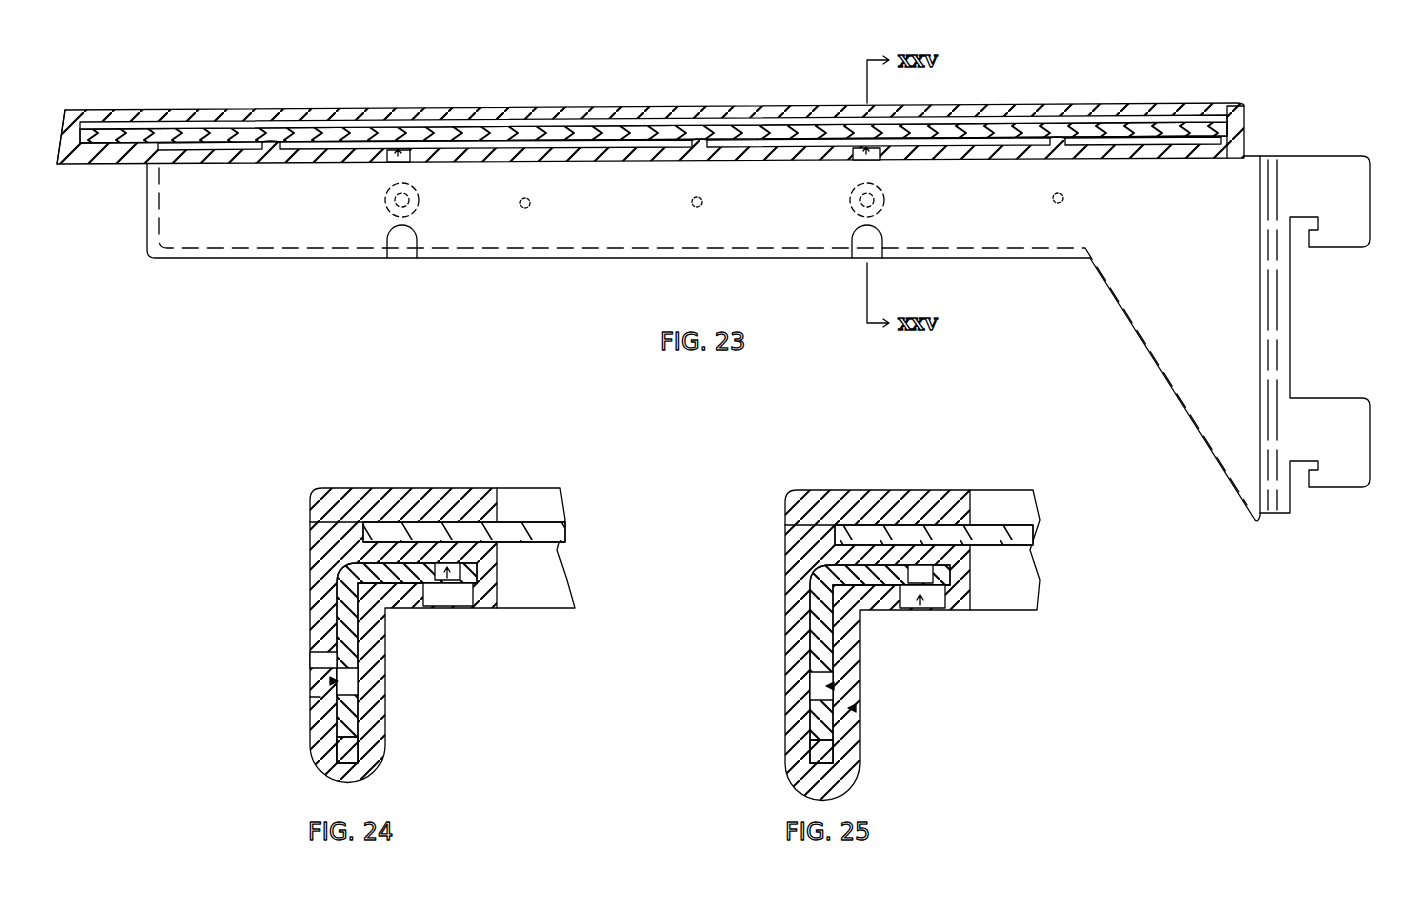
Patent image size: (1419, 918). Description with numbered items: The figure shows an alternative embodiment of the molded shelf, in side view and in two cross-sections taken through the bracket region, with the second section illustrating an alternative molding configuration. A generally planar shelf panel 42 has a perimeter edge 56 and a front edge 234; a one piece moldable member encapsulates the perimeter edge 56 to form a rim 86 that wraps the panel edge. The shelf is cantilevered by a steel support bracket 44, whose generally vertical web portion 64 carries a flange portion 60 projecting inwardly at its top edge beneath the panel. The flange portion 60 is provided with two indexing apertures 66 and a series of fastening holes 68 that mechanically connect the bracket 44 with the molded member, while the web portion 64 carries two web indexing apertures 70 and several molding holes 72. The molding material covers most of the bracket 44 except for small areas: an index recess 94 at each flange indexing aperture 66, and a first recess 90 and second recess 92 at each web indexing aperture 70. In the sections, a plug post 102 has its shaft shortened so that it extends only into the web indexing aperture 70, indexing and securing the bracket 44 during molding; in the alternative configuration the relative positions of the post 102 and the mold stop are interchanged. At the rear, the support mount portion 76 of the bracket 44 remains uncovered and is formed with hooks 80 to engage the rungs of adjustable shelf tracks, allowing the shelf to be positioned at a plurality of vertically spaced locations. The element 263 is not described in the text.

In FIG. 23, the shelf panel 42 is at (653, 122).
In FIG. 24, the shelf panel 42 is at (560, 540).
In FIG. 25, the shelf panel 42 is at (1025, 532).
In FIG. 23, the support bracket 44 is at (324, 230).
In FIG. 24, the support bracket 44 is at (355, 655).
In FIG. 25, the support bracket 44 is at (818, 648).
In FIG. 24, the perimeter edge 56 is at (312, 532).
In FIG. 25, the perimeter edge 56 is at (835, 535).
In FIG. 23, the flange portion 60 is at (1200, 142).
In FIG. 24, the flange portion 60 is at (395, 605).
In FIG. 25, the flange portion 60 is at (872, 585).
In FIG. 24, the web portion 64 is at (345, 740).
In FIG. 25, the web portion 64 is at (828, 745).
In FIG. 23, the indexing apertures 66 is at (392, 152).
In FIG. 24, the indexing apertures 66 is at (447, 578).
In FIG. 25, the indexing apertures 66 is at (918, 580).
In FIG. 23, the fastening holes 68 is at (272, 150).
In FIG. 24, the web indexing apertures 70 is at (332, 681).
In FIG. 25, the web indexing apertures 70 is at (834, 686).
In FIG. 23, the molding holes 72 is at (1085, 210).
In FIG. 23, the support mount portion 76 is at (1282, 347).
In FIG. 23, the hooks 80 is at (1352, 405).
In FIG. 23, the rim 86 is at (452, 108).
In FIG. 24, the rim 86 is at (490, 500).
In FIG. 25, the rim 86 is at (965, 500).
In FIG. 25, the first recess 90 is at (856, 708).
In FIG. 24, the second recess 92 is at (312, 698).
In FIG. 23, the index recess 94 is at (405, 152).
In FIG. 24, the index recess 94 is at (460, 595).
In FIG. 25, the index recess 94 is at (935, 600).
In FIG. 23, the post 102 is at (418, 208).
In FIG. 24, the post 102 is at (318, 668).
In FIG. 23, the front edge 234 is at (65, 112).
In FIG. 23, the end of shelf 263 is at (1228, 118).